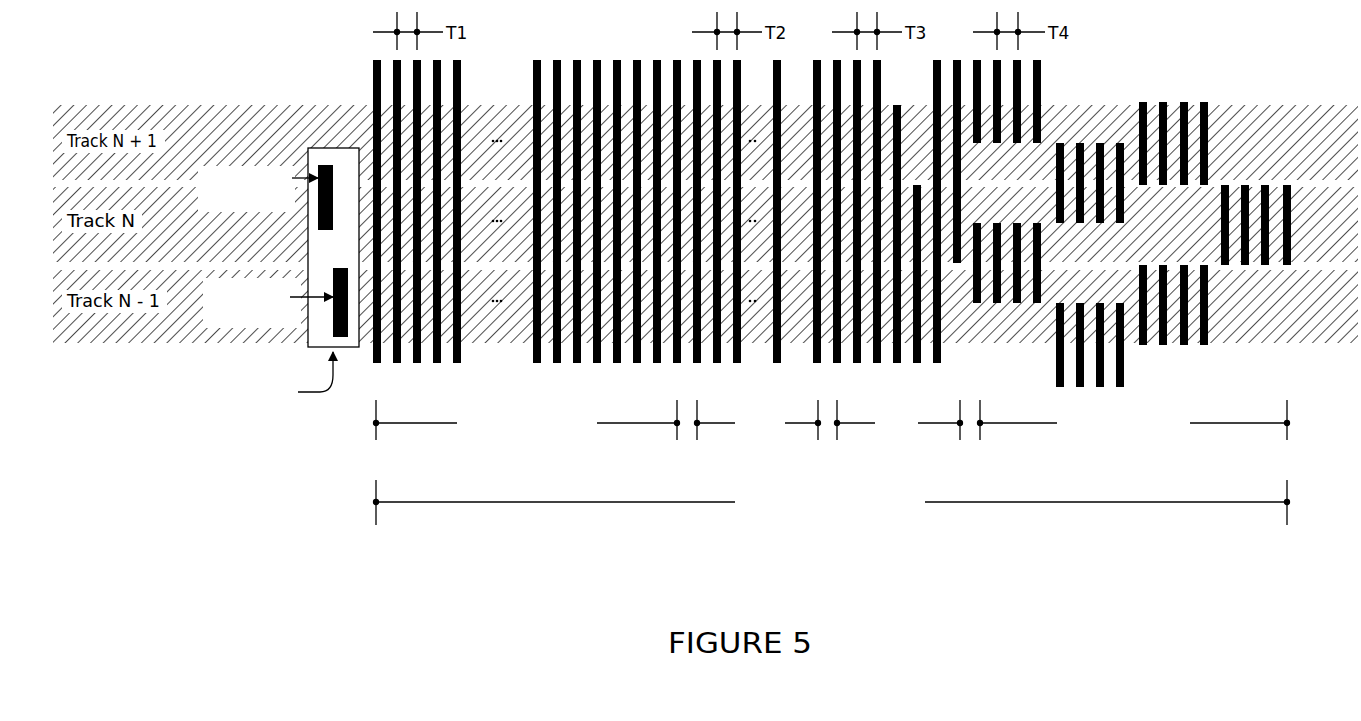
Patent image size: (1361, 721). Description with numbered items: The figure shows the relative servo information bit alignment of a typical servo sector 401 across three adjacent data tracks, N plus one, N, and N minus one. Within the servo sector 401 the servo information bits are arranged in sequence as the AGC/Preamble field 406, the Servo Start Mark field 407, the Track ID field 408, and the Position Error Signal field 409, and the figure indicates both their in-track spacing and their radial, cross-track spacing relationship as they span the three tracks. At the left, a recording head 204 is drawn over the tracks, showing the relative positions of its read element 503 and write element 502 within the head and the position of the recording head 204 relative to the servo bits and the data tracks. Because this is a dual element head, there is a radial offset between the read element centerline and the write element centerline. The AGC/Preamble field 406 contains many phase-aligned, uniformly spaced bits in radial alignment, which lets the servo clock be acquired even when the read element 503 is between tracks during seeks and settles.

The recording head 204 is at (338, 147).
The read element 503 is at (308, 207).
The write element 502 is at (333, 322).
The AGC/Preamble field 406 is at (653, 423).
The Servo Start Mark (STM) field 407 is at (797, 423).
The Track ID (TID) field 408 is at (935, 423).
The Position Error Signal (PES) field 409 is at (1262, 423).
The servo sector 401 is at (1258, 502).